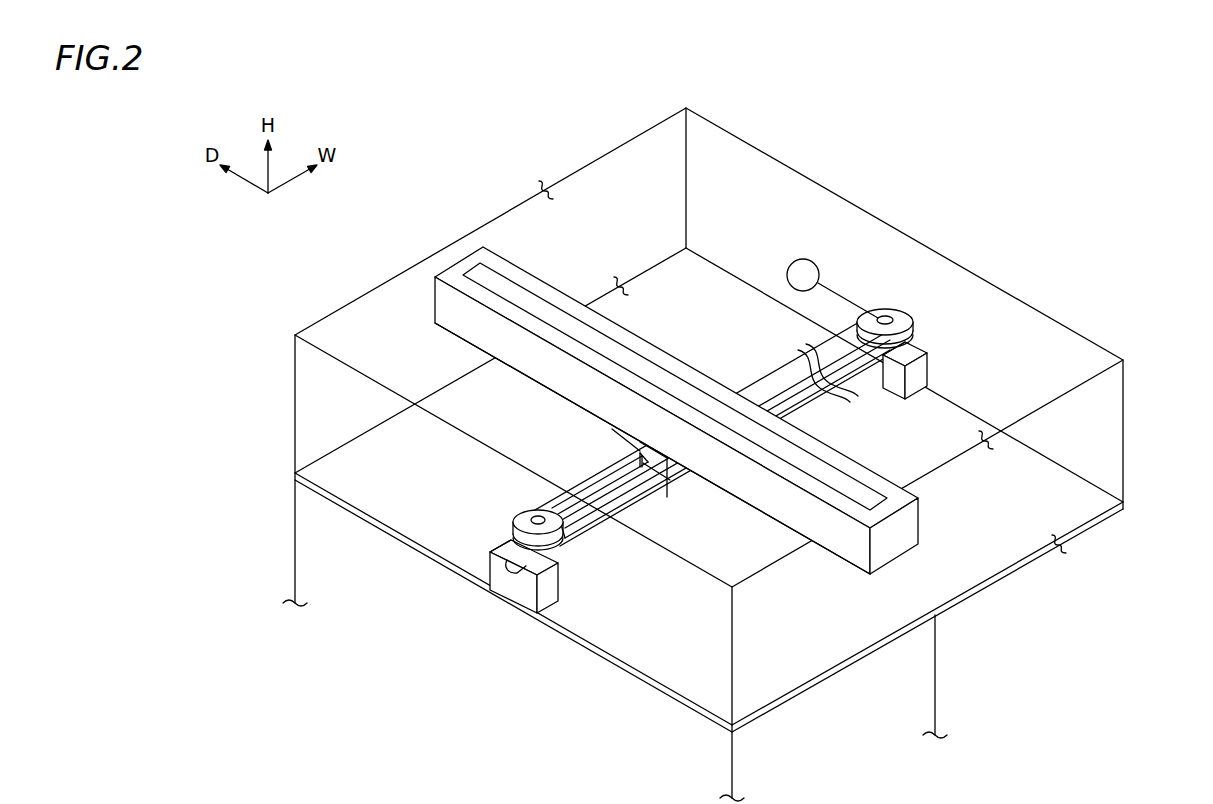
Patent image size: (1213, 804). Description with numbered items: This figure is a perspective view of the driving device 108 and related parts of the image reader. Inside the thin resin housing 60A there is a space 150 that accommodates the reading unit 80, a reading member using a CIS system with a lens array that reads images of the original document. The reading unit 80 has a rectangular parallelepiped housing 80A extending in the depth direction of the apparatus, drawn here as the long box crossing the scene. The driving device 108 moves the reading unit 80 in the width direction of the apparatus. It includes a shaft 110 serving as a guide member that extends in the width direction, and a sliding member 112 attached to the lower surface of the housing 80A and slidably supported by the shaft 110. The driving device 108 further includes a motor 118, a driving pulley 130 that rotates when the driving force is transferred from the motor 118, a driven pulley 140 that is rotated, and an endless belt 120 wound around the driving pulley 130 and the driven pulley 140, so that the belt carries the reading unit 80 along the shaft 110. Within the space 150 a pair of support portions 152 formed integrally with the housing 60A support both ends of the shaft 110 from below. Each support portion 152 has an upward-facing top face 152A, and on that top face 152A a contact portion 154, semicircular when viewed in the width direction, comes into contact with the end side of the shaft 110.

The housing 60A is at (1127, 432).
The reading unit 80 is at (670, 333).
The housing 80A is at (528, 379).
The driving device 108 is at (888, 430).
The shaft 110 is at (606, 533).
The sliding member 112 is at (696, 502).
The motor 118 is at (794, 262).
The endless belt 120 is at (592, 474).
The driving pulley 130 is at (882, 298).
The driven pulley 140 is at (515, 503).
The space 150 is at (1043, 347).
The support portions 152 is at (573, 593).
The top face 152A is at (497, 548).
The contact portion 154 is at (505, 583).